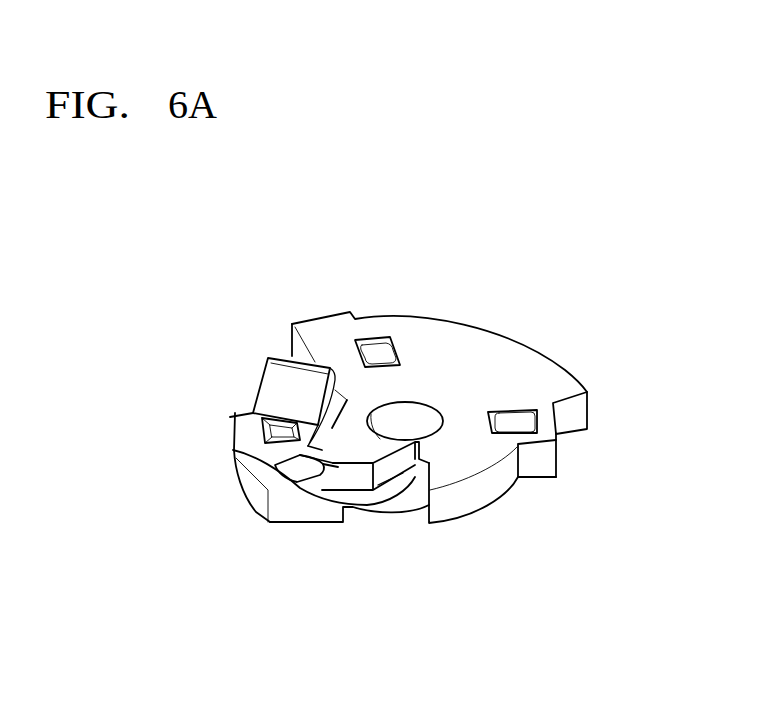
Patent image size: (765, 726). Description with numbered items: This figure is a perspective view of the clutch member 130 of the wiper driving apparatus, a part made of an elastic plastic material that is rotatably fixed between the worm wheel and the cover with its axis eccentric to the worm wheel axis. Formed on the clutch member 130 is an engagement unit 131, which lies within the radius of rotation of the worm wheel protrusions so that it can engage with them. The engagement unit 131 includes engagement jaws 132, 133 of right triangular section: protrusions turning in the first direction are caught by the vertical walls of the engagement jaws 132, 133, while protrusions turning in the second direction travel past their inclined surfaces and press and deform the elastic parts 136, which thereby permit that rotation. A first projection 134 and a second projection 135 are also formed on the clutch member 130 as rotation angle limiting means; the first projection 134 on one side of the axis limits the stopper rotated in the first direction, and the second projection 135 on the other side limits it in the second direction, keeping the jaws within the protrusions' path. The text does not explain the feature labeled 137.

The clutch member 130 is at (372, 399).
The engagement unit 131 is at (232, 431).
The engagement jaw 132 is at (287, 390).
The engagement jaw 133 is at (233, 451).
The first projection 134 is at (247, 488).
The second projection 135 is at (322, 313).
The elastic part 136 is at (358, 483).
The hole 137 is at (418, 415).